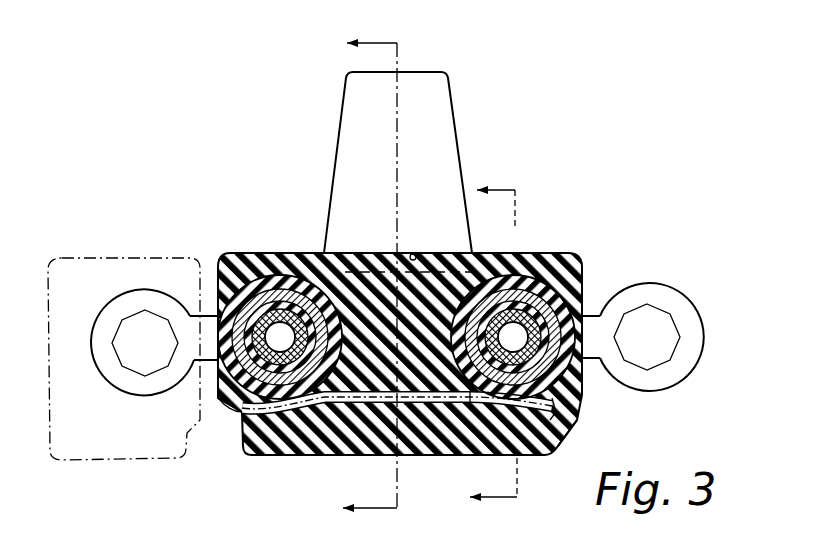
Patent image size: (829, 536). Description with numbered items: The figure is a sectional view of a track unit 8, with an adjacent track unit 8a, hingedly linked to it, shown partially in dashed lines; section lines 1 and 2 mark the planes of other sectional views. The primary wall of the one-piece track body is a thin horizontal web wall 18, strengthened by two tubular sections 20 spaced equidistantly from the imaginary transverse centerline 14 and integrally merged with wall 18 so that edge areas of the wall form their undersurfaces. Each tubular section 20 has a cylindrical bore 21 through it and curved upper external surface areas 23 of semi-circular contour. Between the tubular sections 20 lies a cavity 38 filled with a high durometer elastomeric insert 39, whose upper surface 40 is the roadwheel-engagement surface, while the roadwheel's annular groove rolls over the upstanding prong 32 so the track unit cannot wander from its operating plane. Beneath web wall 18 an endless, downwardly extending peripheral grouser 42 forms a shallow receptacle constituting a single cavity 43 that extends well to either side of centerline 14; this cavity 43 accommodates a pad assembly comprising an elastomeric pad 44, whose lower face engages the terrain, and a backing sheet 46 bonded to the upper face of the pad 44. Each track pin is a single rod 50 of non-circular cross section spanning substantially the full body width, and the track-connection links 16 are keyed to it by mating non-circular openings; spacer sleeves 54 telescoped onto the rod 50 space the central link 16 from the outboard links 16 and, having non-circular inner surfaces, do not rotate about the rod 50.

The section line 1- 1 is at (496, 329).
The section line 2- 2 is at (355, 281).
The track unit 8 is at (566, 253).
The adjacent track unit 8a is at (82, 256).
The transverse centerline 14 is at (397, 137).
The track-connection link 16 is at (143, 290).
The web wall 18 is at (364, 403).
The tubular section 20 is at (247, 253).
The cylindrical bore 21 is at (255, 380).
The upper external surface area 23 is at (294, 262).
The prong 32 is at (440, 118).
The cavity 38 is at (342, 318).
The elastomeric insert 39 is at (413, 253).
The upper surface 40 is at (345, 252).
The peripheral grouser 42 is at (232, 410).
The cavity 43 is at (552, 412).
The elastomeric pad 44 is at (303, 433).
The backing sheet 46 is at (436, 402).
The rod 50 is at (266, 338).
The spacer sleeve 54 is at (245, 375).